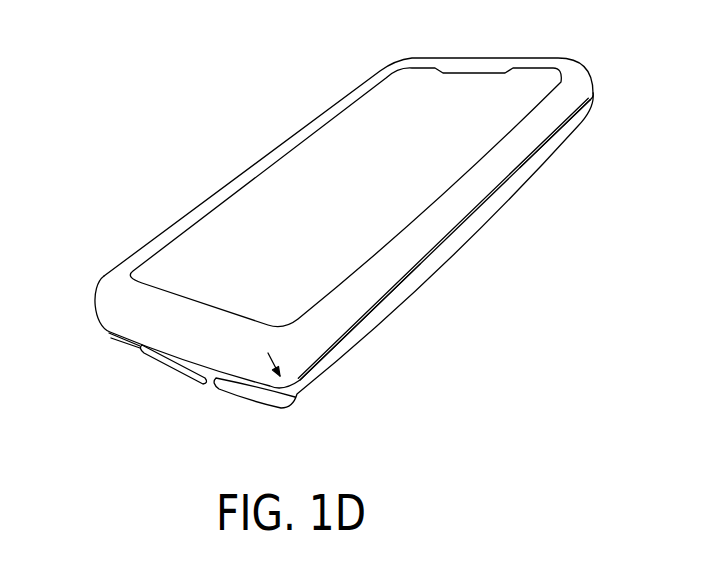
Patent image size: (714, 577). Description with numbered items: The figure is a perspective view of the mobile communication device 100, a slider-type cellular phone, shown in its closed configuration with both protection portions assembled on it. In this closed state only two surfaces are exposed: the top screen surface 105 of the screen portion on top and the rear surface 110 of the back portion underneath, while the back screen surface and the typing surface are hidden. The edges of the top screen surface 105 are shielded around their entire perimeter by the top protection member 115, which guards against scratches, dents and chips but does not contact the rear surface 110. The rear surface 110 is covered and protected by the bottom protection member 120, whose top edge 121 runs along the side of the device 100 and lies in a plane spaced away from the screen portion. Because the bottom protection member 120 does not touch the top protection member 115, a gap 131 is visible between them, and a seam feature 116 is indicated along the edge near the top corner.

The mobile communication device 100 is at (237, 115).
The top screen surface 105 is at (455, 80).
The rear surface 110 is at (456, 264).
The top protection member 115 is at (354, 96).
The seam opening 116 is at (538, 146).
The bottom protection member 120 is at (328, 369).
The top edge 121 is at (360, 324).
The gap 131 is at (287, 393).